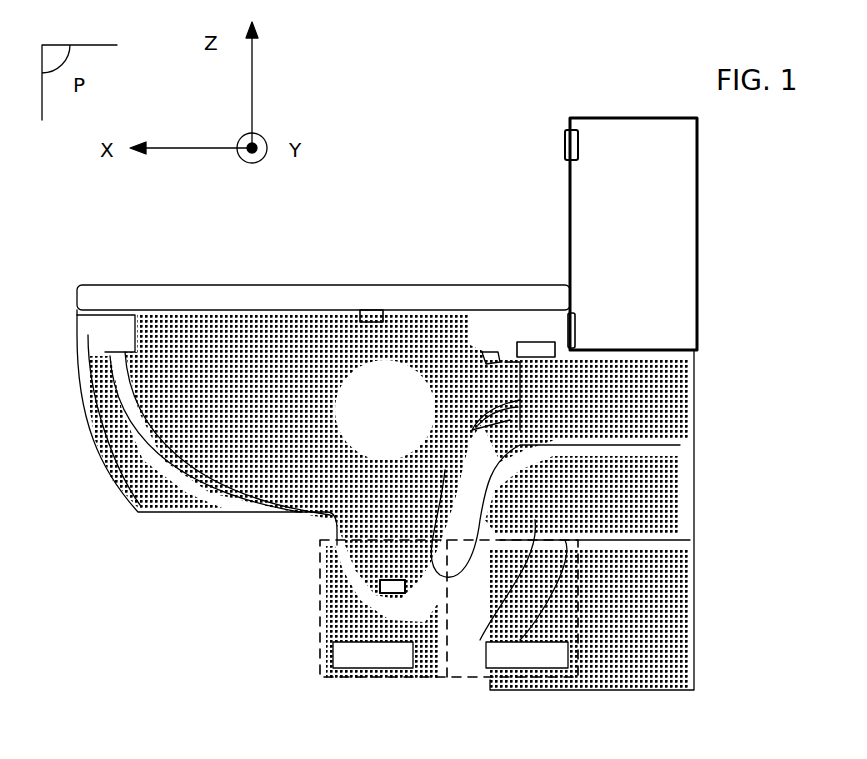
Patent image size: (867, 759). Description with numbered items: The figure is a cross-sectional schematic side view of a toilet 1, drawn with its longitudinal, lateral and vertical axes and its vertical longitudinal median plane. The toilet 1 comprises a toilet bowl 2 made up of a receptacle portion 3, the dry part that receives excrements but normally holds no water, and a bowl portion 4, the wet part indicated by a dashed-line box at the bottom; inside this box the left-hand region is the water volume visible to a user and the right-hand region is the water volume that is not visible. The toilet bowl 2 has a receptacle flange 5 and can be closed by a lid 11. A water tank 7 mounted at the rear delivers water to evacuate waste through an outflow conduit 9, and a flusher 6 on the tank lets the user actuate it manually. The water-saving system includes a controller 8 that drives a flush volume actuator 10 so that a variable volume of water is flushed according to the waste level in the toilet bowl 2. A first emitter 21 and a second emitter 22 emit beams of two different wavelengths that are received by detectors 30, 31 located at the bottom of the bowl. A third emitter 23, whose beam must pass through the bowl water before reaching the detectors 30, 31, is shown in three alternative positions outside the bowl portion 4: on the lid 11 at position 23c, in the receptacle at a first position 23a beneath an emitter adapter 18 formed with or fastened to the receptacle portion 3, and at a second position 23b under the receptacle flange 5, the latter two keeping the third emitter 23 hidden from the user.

The toilet 1 is at (716, 325).
The toilet bowl 2 is at (241, 524).
The receptacle portion 3 is at (138, 413).
The bowl portion 4 is at (345, 678).
The receptacle flange 5 is at (128, 350).
The flusher 6 is at (565, 148).
The water tank 7 is at (688, 240).
The controller 8 is at (533, 342).
The outflow conduit 9 is at (659, 477).
The flush volume actuator 10 is at (600, 352).
The lid 11 is at (258, 300).
The emitter adapter 18 is at (520, 378).
The first emitter 21 is at (380, 584).
The second emitter 22 is at (392, 586).
The detector 30 is at (392, 586).
The detector 31 is at (392, 586).
The third emitter 23 is at (556, 331).
The first position of the third emitter 23a is at (472, 428).
The second position of the third emitter 23b is at (495, 345).
The lid position of the third emitter 23c is at (372, 312).